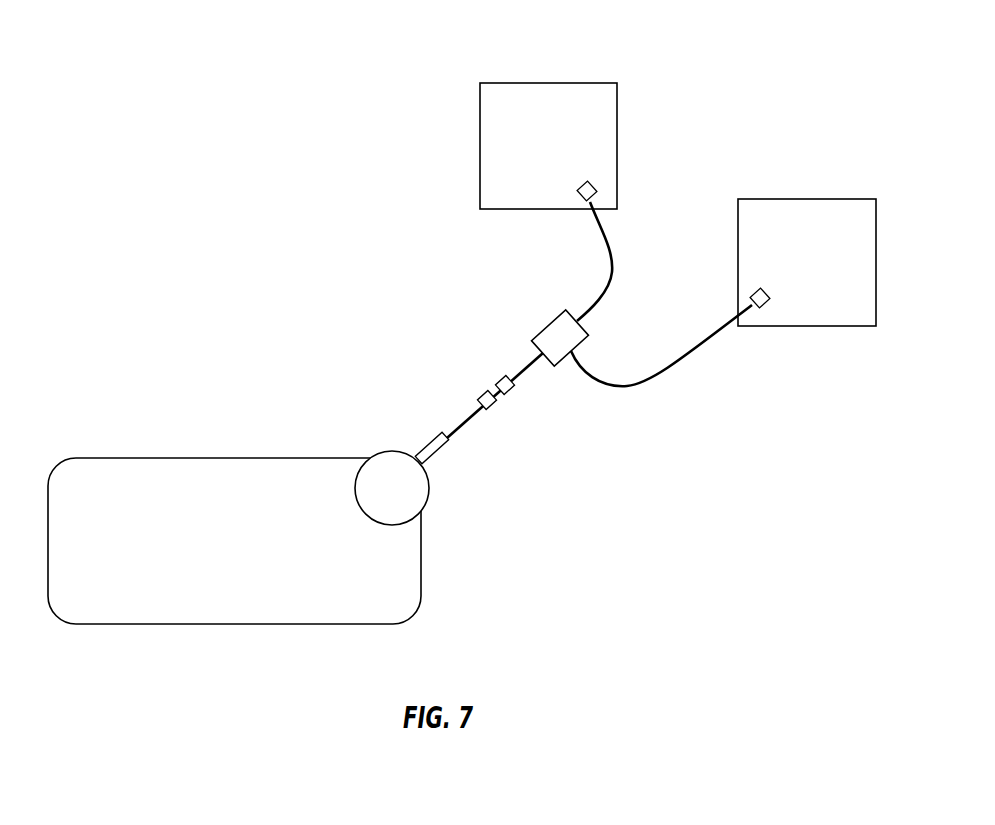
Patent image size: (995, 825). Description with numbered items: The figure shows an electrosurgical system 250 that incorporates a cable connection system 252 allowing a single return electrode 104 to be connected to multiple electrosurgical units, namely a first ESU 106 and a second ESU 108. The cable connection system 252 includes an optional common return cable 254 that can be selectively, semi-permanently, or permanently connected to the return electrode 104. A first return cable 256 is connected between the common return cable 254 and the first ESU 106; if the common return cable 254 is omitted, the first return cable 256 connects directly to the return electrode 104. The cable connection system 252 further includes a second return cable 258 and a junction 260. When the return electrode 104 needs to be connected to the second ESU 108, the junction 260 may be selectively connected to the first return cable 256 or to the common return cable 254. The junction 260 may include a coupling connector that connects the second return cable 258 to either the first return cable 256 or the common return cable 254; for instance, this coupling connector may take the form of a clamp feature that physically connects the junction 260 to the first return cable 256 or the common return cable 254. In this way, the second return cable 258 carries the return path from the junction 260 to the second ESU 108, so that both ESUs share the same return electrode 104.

The electrosurgical system 250 is at (332, 57).
The return electrode 104 is at (208, 624).
The first ESU 106 is at (585, 83).
The second ESU 108 is at (757, 199).
The cable connection system 252 is at (573, 214).
The common return cable 254 is at (472, 432).
The first return cable 256 is at (623, 256).
The second return cable 258 is at (677, 377).
The junction 260 is at (572, 357).